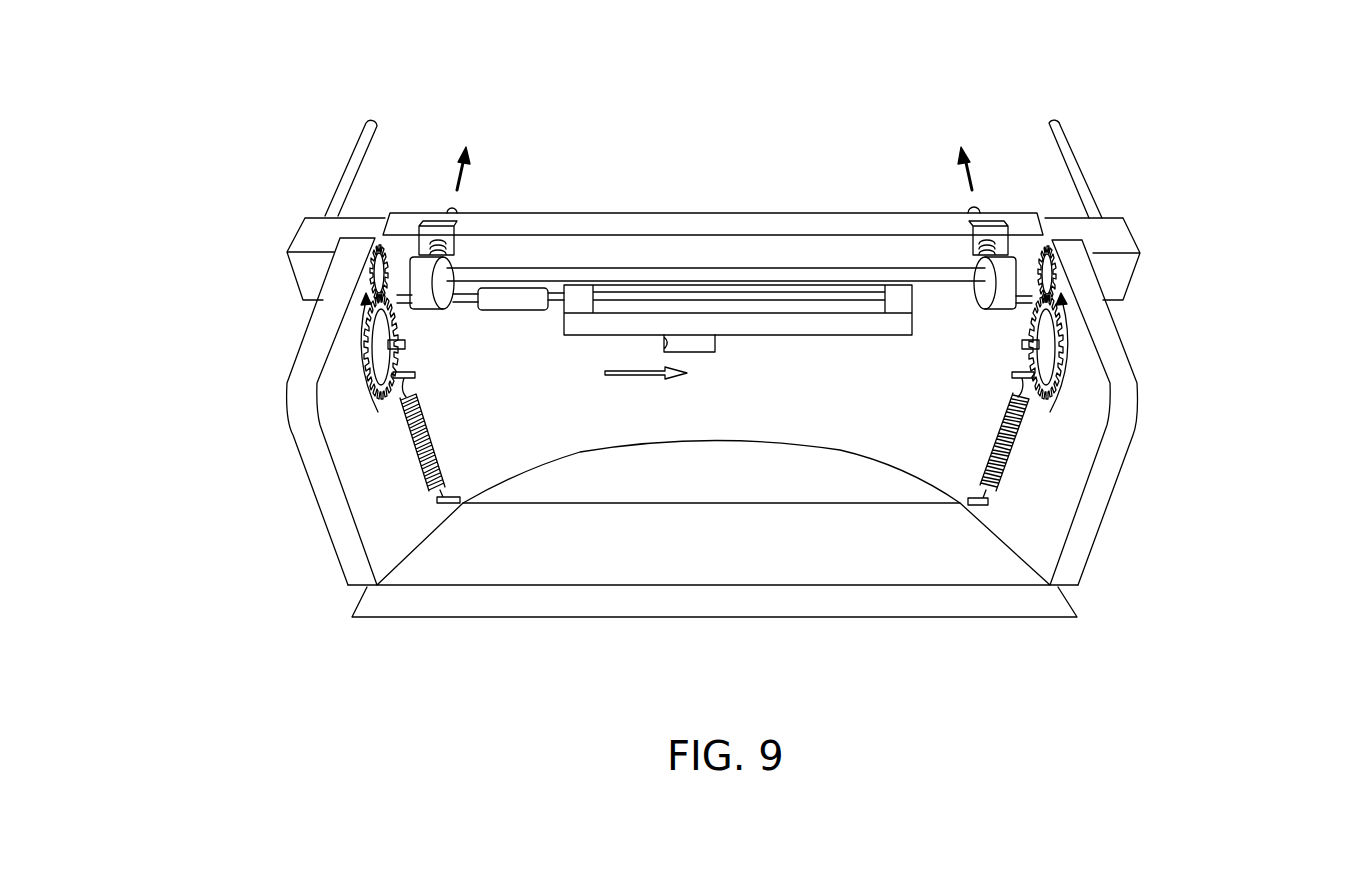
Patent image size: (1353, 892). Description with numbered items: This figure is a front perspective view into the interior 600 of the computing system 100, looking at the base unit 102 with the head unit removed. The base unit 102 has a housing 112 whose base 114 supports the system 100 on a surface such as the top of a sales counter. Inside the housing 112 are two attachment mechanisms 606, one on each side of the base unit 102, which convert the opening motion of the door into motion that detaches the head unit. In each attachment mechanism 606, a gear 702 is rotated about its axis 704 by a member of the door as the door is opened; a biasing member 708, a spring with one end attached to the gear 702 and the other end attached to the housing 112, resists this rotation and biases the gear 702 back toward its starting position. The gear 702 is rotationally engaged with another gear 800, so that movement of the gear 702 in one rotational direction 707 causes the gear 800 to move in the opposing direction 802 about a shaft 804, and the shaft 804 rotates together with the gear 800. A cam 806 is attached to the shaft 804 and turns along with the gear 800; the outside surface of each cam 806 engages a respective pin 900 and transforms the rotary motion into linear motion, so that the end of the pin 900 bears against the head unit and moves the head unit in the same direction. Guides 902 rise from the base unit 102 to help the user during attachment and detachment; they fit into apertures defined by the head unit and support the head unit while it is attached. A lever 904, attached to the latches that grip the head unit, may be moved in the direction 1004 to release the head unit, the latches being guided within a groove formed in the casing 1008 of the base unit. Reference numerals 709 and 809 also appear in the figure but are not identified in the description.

The computing system 100 is at (243, 147).
The base unit 102 is at (1138, 430).
The housing 112 is at (1087, 567).
The base 114 is at (510, 460).
The interior 600 is at (492, 402).
The attachment mechanism 606 is at (418, 352).
The gear 702 is at (363, 395).
The axis 704 is at (415, 325).
The rotational direction 707 is at (362, 367).
The biasing member 708 is at (430, 447).
The spring anchor 709 is at (437, 500).
The gear 800 is at (378, 262).
The rotational direction 802 is at (370, 268).
The shaft 804 is at (645, 268).
The cam 806 is at (415, 313).
The lifting direction arrow 809 is at (463, 167).
The pin 900 is at (452, 208).
The guides 902 is at (372, 120).
The lever 904 is at (717, 343).
The direction arrow 1004 is at (640, 375).
The casing 1008 is at (793, 335).